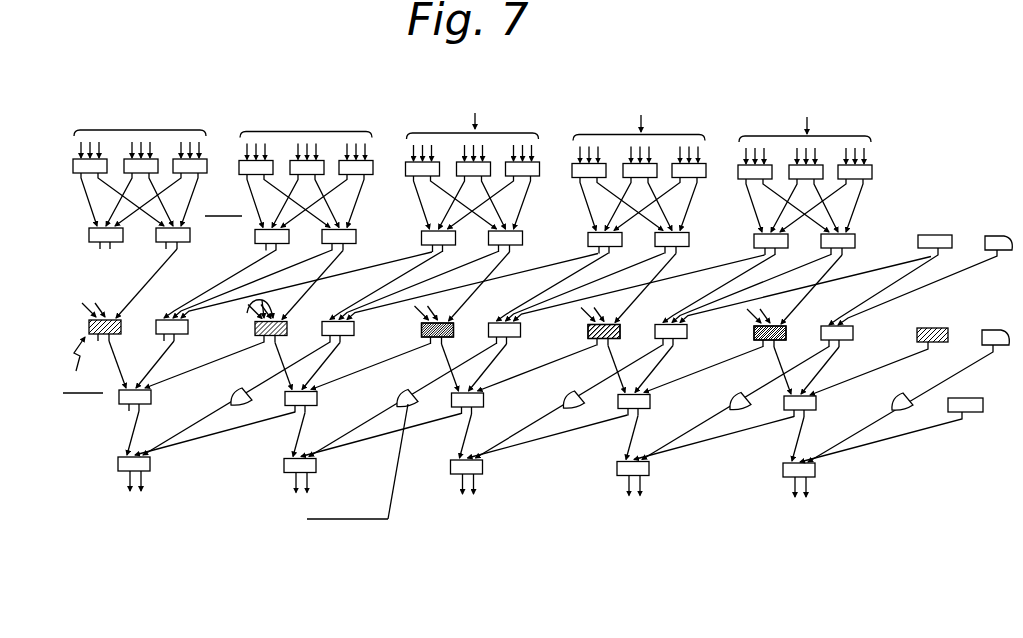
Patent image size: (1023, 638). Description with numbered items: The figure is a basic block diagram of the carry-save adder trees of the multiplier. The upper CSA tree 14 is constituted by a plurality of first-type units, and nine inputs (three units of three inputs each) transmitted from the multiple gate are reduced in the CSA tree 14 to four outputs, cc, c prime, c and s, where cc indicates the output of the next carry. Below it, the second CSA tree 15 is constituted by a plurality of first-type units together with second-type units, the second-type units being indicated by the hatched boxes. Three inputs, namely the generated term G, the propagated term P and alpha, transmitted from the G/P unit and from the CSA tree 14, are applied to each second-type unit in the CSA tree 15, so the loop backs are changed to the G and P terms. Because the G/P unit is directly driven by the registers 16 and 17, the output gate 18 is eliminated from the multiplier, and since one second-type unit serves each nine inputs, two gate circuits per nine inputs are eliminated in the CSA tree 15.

The CSA tree 14 is at (64, 135).
The CSA tree 15 is at (64, 317).
The register 16 is at (419, 316).
The register 17 is at (591, 318).
The output gate 18 is at (748, 318).